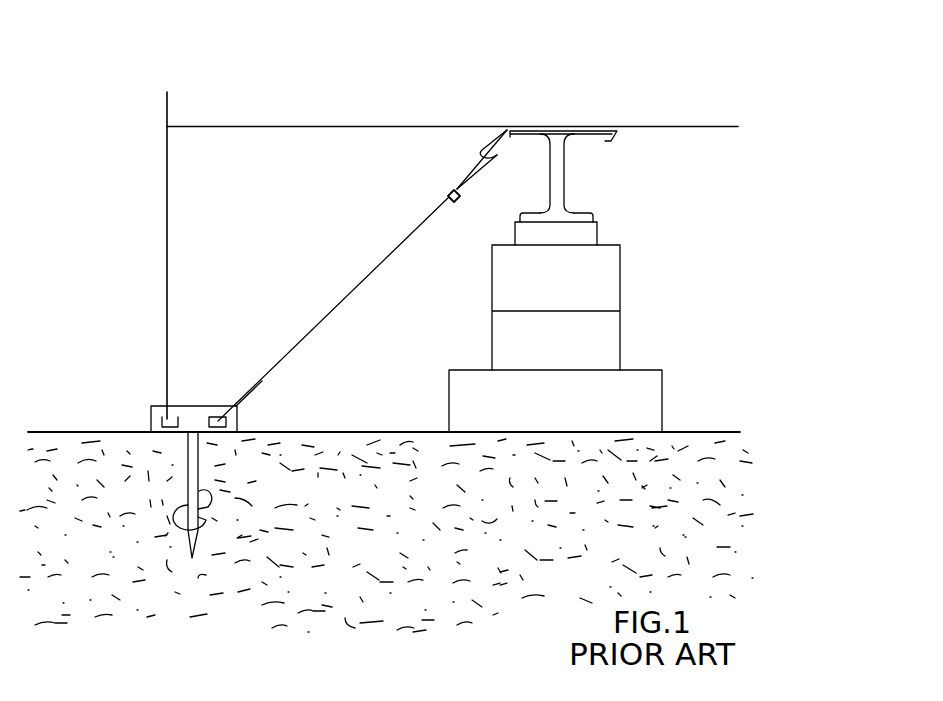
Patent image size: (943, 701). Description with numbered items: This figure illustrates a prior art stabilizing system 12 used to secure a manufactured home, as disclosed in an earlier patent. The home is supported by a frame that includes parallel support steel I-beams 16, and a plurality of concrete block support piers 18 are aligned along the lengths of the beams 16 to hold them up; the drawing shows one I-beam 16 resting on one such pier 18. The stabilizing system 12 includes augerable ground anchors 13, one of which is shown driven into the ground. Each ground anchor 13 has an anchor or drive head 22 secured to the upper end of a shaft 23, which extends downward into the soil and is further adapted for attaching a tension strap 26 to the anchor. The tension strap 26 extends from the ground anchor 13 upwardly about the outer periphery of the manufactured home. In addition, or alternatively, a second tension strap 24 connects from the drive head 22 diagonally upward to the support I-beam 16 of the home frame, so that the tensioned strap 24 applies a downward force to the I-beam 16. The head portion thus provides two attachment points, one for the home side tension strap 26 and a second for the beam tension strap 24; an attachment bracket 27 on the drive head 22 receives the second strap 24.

The stabilizing system 12 is at (420, 232).
The tension strap 26 is at (167, 215).
The support steel I-beam 16 is at (564, 190).
The concrete block support pier 18 is at (621, 328).
The second tension strap 24 is at (375, 262).
The augerable ground anchor 13 is at (204, 420).
The anchor or drive head 22 is at (250, 432).
The strap attachment bracket 27 is at (248, 400).
The shaft 23 is at (188, 461).